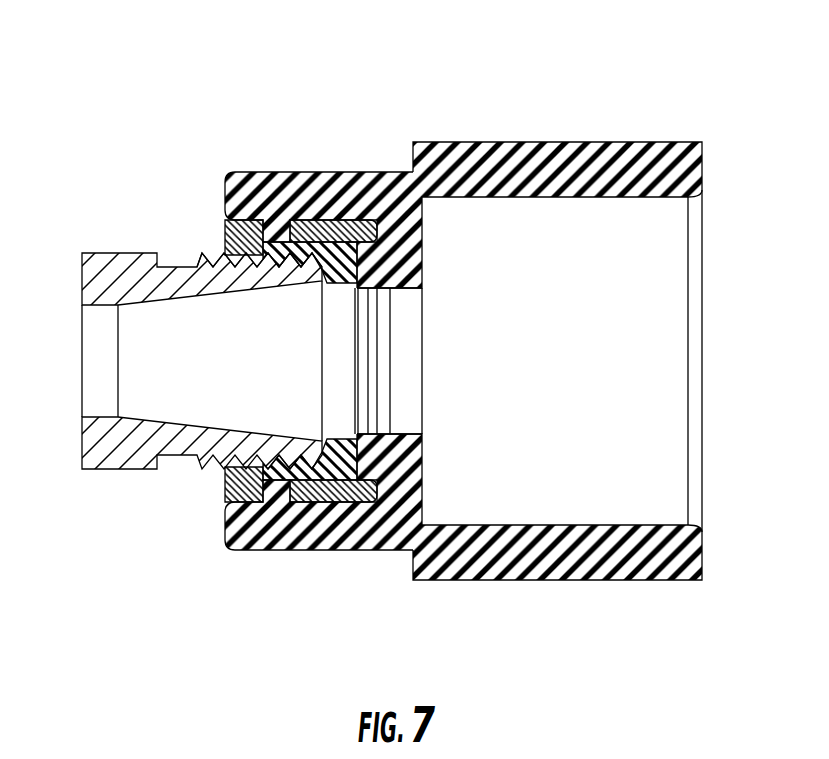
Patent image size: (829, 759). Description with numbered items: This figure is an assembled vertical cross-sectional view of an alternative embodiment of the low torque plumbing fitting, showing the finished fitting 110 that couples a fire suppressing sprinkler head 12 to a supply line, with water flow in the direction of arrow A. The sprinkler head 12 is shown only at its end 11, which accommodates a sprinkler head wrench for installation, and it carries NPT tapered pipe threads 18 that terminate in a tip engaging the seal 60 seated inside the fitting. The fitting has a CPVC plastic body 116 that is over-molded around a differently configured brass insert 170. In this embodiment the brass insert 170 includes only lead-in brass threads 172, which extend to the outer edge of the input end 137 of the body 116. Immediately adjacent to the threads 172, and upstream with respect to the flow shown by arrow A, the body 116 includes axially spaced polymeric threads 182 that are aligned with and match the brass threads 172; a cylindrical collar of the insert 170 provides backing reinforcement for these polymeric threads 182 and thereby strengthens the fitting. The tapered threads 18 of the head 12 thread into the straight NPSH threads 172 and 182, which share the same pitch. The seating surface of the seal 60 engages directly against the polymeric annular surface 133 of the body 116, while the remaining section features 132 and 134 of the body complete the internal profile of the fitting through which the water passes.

The finished fitting 110 is at (446, 321).
The CPVC plastic body 116 is at (556, 583).
The input end 137 is at (223, 522).
The shoulder 132 is at (403, 435).
The polymeric annular surface 133 is at (356, 312).
The bore wall 134 is at (417, 268).
The brass insert 170 is at (220, 218).
The lead-in brass threads 172 is at (237, 483).
The polymeric threads 182 is at (322, 437).
The seal 60 is at (333, 333).
The sprinkler head end 11 is at (113, 253).
The sprinkler head 12 is at (120, 480).
The NPT tapered pipe threads 18 is at (197, 257).
The arrow A is at (740, 360).